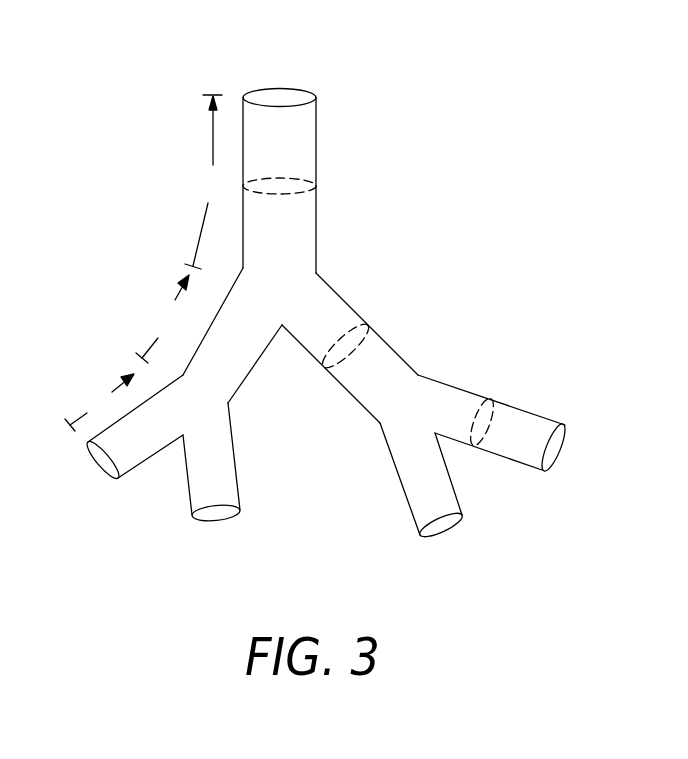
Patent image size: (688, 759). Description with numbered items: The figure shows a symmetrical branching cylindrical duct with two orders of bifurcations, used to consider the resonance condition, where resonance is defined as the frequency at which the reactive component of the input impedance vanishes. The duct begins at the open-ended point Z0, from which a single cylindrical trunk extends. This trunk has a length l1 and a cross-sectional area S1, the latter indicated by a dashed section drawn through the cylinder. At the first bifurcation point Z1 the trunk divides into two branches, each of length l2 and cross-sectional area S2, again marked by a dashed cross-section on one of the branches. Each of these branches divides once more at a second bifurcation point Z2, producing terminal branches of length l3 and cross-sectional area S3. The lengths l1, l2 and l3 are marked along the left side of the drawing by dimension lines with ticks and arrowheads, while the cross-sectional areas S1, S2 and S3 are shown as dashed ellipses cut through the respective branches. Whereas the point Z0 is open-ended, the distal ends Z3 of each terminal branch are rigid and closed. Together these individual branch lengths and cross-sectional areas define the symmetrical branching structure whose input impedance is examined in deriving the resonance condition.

The open-ended point Z0 is at (279, 156).
The first bifurcation point Z1 is at (300, 345).
The second bifurcation point Z2 is at (376, 458).
The distal end of terminal branch Z3 is at (133, 428).
The cross-sectional area of first branch S1 is at (313, 182).
The cross-sectional area of second branch S2 is at (360, 320).
The cross-sectional area of third branch S3 is at (487, 397).
The length of first branch l1 is at (203, 182).
The length of second branch l2 is at (162, 319).
The length of third branch l3 is at (99, 402).